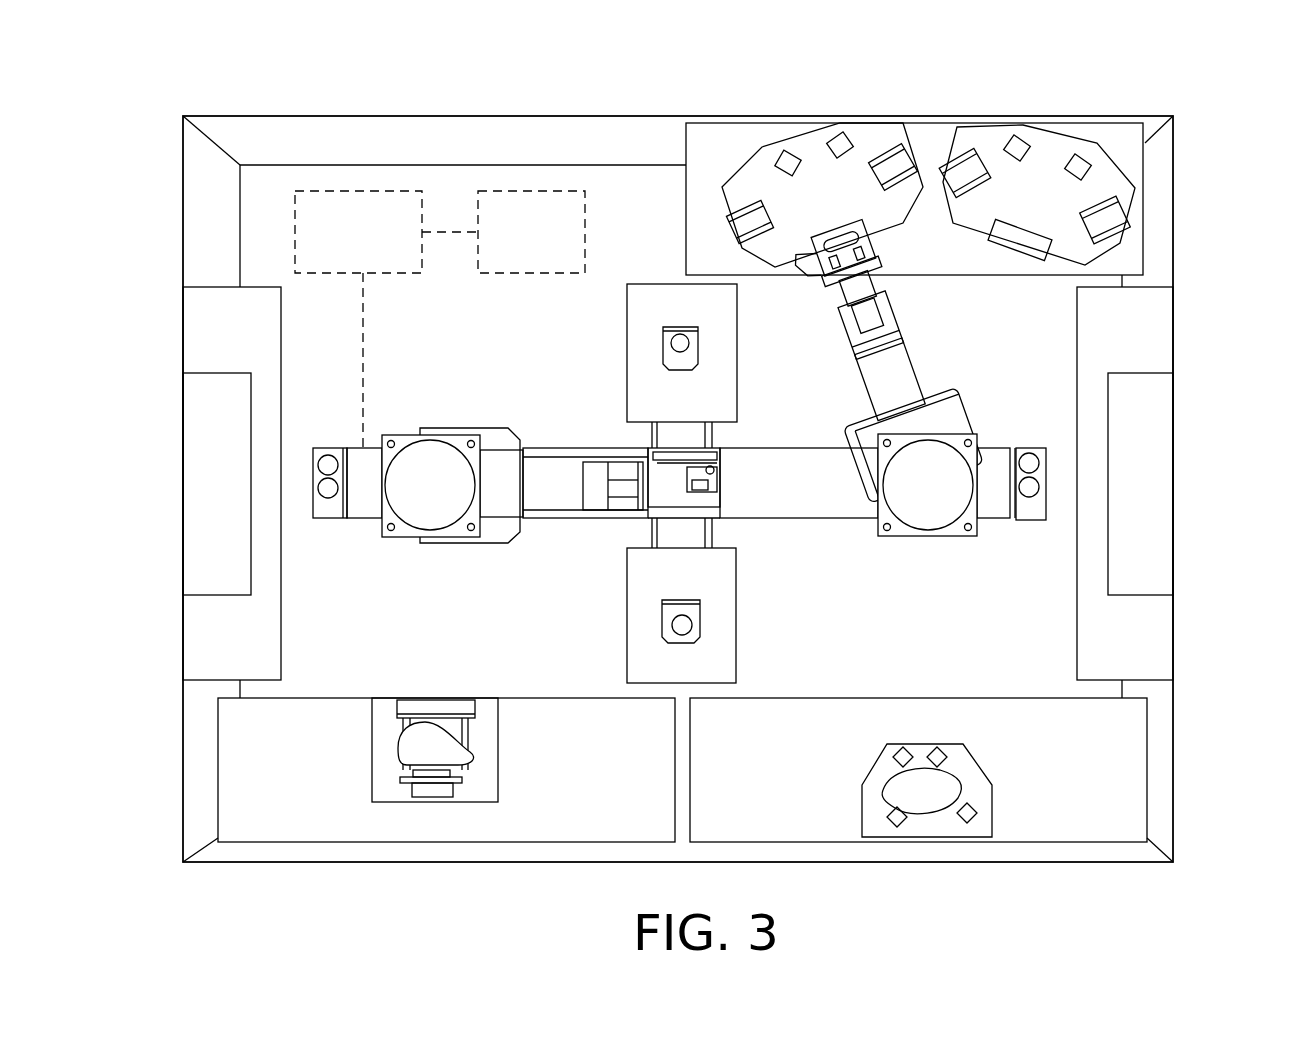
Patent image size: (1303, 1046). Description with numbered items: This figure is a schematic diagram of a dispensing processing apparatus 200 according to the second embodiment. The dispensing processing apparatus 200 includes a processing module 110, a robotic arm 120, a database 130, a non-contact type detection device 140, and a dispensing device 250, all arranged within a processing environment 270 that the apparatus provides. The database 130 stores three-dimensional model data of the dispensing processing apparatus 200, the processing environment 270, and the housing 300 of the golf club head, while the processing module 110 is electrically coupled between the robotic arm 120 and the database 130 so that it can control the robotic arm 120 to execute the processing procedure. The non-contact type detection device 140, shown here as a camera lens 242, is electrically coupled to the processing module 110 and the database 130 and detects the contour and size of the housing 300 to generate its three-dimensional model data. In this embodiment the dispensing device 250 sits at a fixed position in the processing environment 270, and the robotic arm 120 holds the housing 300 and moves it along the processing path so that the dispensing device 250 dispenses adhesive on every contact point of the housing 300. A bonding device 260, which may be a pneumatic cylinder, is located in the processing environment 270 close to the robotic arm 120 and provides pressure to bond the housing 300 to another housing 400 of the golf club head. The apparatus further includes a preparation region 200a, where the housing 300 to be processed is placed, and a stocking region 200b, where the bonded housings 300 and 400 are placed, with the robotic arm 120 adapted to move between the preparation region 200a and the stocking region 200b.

The dispensing processing apparatus 200 is at (191, 93).
The processing module 110 is at (362, 191).
The database 130 is at (525, 191).
The bonding device 260 is at (964, 163).
The stocking region 200b is at (1103, 130).
The processing environment 270 is at (1023, 355).
The dispensing device 250 is at (665, 343).
The robotic arm 120 is at (433, 460).
The non-contact type detection device 140 is at (693, 480).
The camera lens 242 is at (750, 517).
The preparation region 200a is at (215, 752).
The housing of the golf club head 300 is at (405, 740).
The another housing of the golf club head 400 is at (953, 786).